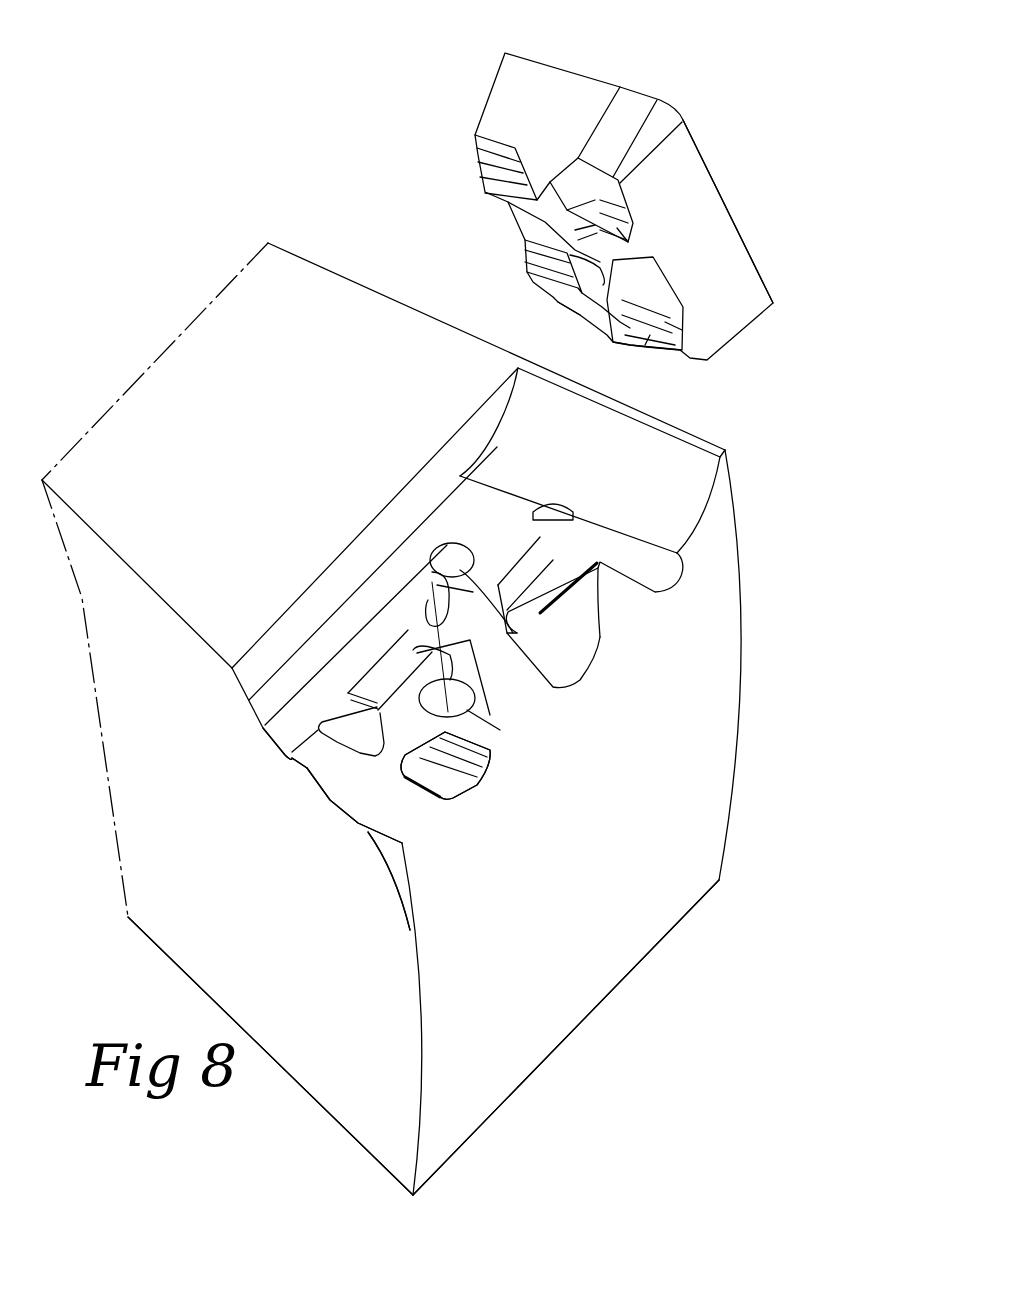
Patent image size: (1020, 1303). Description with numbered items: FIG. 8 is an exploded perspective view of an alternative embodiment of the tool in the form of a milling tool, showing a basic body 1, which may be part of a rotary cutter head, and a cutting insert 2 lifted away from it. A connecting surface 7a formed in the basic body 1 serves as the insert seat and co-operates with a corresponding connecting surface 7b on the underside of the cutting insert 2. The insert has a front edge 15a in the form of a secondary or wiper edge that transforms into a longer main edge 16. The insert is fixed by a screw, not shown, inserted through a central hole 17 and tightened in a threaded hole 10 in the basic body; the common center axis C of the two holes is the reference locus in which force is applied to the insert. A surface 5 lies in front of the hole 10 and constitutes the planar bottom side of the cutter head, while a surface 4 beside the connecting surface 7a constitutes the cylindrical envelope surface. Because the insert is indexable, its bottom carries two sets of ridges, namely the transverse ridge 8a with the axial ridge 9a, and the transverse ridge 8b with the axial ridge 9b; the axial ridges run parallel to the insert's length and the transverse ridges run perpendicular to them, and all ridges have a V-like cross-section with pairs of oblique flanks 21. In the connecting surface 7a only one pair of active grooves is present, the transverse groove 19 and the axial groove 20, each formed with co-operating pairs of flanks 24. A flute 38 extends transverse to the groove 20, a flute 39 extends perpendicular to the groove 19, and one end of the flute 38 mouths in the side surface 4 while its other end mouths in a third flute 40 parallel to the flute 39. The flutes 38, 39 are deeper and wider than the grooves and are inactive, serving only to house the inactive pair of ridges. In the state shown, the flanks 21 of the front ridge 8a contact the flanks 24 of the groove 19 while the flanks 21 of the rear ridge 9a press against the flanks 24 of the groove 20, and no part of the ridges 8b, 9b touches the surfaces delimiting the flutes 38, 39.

The basic body 1 is at (328, 240).
The cutting insert 2 is at (786, 155).
The surface 4 is at (608, 823).
The surface 5 is at (324, 923).
The connecting surface 7a is at (503, 537).
The connecting surface 7b is at (503, 221).
The transverse ridge 8a is at (487, 170).
The transverse ridge 8b is at (528, 277).
The axial ridge 9a is at (633, 347).
The axial ridge 9b is at (573, 167).
The threaded hole 10 is at (455, 698).
The front edge 15a is at (643, 88).
The main edge 16 is at (708, 172).
The central hole 17 is at (590, 258).
The groove 19 is at (465, 787).
The axial groove 20 is at (582, 560).
The oblique flanks 21 is at (617, 228).
The flanks 24 is at (550, 548).
The flute 38 is at (580, 657).
The flute 39 is at (338, 790).
The third flute 40 is at (280, 737).
The center axis C is at (435, 597).